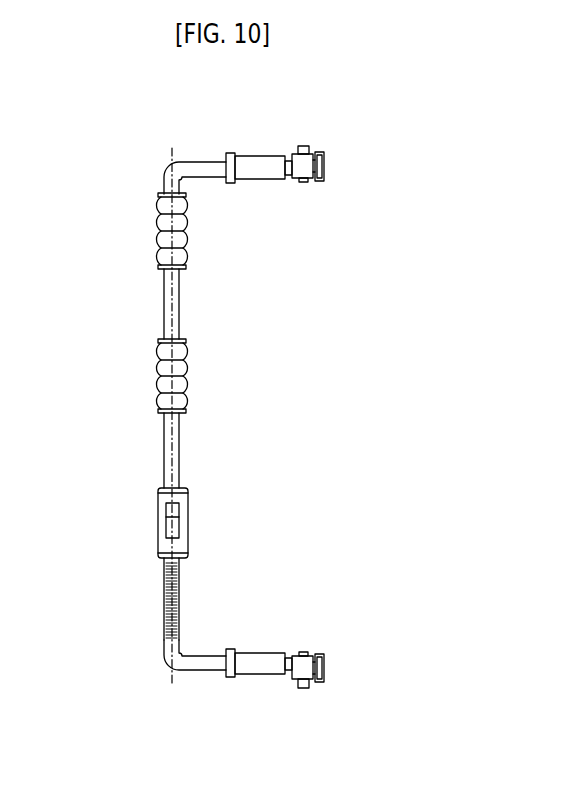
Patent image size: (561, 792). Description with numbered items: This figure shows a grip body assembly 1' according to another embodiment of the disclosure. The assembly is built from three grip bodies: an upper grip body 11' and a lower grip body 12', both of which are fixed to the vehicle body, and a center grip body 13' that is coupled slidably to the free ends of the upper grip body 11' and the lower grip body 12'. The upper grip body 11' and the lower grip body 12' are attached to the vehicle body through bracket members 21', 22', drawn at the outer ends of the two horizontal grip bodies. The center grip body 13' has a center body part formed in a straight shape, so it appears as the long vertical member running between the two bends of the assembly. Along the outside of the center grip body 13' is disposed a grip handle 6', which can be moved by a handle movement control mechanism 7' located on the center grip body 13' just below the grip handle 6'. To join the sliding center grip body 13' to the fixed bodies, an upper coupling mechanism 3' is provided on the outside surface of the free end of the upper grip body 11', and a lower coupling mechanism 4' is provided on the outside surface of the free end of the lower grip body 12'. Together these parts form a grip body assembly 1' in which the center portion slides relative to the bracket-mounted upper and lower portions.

The grip body assembly 1' is at (139, 395).
The upper coupling mechanism 3' is at (211, 134).
The lower coupling mechanism 4' is at (233, 620).
The grip handle 6' is at (211, 340).
The handle movement control mechanism 7' is at (219, 523).
The upper grip body 11' is at (263, 132).
The lower grip body 12' is at (267, 630).
The center grip body 13' is at (124, 599).
The bracket member 21' is at (337, 134).
The bracket member 22' is at (341, 643).